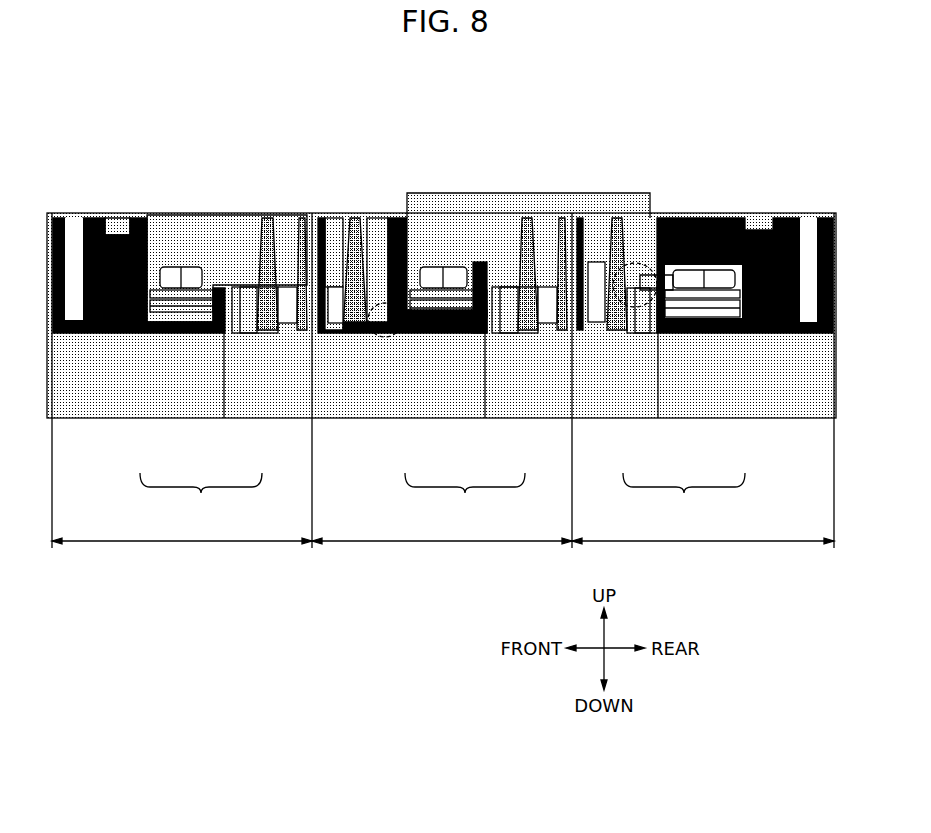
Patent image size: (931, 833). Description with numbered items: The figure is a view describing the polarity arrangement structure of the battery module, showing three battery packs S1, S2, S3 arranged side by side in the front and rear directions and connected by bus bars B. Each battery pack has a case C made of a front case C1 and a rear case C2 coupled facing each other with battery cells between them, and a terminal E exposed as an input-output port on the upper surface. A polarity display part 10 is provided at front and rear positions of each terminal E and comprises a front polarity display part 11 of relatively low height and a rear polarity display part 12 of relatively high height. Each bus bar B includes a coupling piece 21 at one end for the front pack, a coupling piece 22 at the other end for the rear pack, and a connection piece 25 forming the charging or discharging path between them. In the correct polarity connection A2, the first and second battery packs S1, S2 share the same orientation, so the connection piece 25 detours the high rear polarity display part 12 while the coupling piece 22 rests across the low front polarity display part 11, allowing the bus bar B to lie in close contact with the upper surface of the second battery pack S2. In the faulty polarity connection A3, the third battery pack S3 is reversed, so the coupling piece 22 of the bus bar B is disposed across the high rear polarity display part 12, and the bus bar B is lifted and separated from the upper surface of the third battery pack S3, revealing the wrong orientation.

The polarity display part 10 is at (115, 235).
The front polarity display part 11 is at (120, 330).
The rear polarity display part 12 is at (245, 333).
The coupling piece of one end 21 is at (207, 300).
The coupling piece of the other end 22 is at (438, 292).
The connection piece 25 is at (335, 230).
The terminal E is at (177, 278).
The bus bar B is at (247, 240).
The correct polarity connection A2 is at (383, 305).
The faulty polarity connection A3 is at (640, 265).
The case C is at (442, 496).
The front case C1 is at (155, 405).
The rear case C2 is at (246, 405).
The first battery pack S1 is at (182, 551).
The second battery pack S2 is at (442, 551).
The third battery pack S3 is at (703, 551).